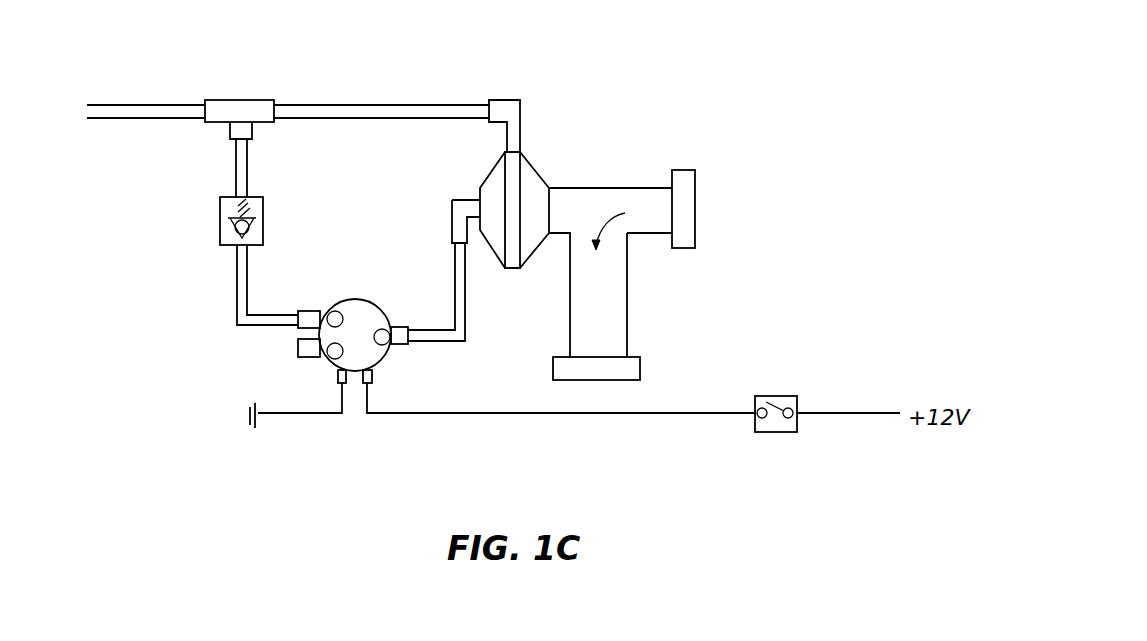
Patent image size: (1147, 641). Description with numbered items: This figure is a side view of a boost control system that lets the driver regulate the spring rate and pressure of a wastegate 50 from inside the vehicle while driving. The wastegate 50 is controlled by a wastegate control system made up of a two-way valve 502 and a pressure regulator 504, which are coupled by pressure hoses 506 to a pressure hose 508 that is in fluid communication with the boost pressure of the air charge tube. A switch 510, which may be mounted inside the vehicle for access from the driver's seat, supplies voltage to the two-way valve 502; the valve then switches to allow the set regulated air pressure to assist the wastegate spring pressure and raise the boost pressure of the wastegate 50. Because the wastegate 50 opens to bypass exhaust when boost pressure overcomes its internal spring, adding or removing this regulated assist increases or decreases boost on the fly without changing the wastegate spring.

The wastegate 50 is at (542, 172).
The two-way valve 502 is at (362, 298).
The pressure regulator 504 is at (263, 218).
The pressure hoses 506 is at (237, 163).
The pressure hose 508 is at (153, 103).
The switch 510 is at (777, 393).